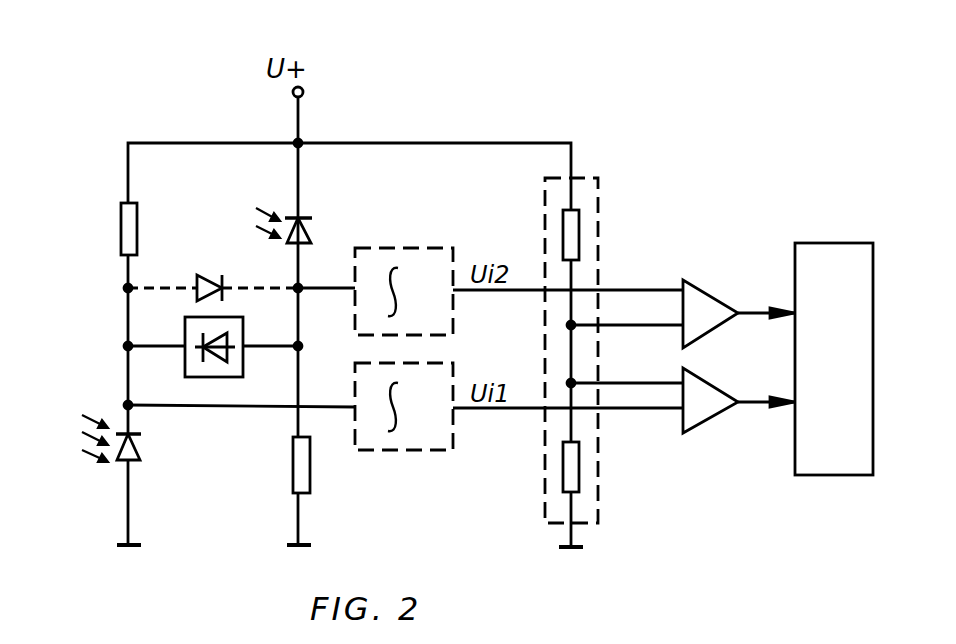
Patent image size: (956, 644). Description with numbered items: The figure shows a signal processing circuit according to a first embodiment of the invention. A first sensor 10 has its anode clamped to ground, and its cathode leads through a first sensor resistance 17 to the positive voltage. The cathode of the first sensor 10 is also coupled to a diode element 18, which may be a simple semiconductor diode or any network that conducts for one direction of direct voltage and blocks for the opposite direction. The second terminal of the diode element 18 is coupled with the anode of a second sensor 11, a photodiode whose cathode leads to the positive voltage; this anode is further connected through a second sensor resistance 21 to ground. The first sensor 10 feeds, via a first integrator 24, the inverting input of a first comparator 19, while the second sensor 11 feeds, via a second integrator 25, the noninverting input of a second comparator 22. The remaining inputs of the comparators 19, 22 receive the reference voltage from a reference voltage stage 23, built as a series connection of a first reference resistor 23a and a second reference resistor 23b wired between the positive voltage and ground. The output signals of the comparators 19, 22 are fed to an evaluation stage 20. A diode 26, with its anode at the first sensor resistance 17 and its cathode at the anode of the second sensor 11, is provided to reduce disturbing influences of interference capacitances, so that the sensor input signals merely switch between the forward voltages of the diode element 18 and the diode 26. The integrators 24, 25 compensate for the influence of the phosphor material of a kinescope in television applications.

The first sensor 10 is at (124, 461).
The second sensor 11 is at (313, 229).
The first sensor resistance 17 is at (121, 224).
The diode element 18 is at (201, 377).
The first comparator 19 is at (705, 422).
The evaluation stage 20 is at (834, 359).
The second sensor resistance 21 is at (310, 485).
The second comparator 22 is at (700, 287).
The reference voltage stage 23 is at (621, 320).
The first reference resistor 23a is at (579, 230).
The second reference resistor 23b is at (579, 480).
The first integrator 24 is at (427, 450).
The second integrator 25 is at (426, 248).
The diode 26 is at (203, 272).